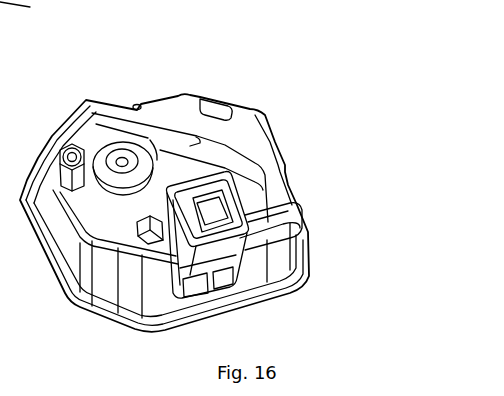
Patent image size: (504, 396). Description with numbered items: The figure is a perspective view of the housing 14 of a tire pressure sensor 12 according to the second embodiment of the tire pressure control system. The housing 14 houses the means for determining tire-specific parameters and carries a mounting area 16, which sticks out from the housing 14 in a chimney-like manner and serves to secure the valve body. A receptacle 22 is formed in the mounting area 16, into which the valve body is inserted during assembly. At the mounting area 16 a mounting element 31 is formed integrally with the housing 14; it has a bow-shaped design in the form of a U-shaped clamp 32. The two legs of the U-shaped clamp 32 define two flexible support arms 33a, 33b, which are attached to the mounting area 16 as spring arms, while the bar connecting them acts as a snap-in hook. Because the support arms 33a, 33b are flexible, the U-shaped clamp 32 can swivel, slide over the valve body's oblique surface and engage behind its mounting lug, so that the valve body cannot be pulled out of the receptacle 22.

The tire pressure sensor 12 is at (265, 118).
The housing 14 is at (293, 201).
The mounting area 16 is at (178, 297).
The receptacle 22 is at (213, 262).
The mounting element 31 is at (186, 186).
The U-shaped clamp 32 is at (193, 186).
The support arm 33a is at (188, 183).
The support arm 33b is at (218, 180).